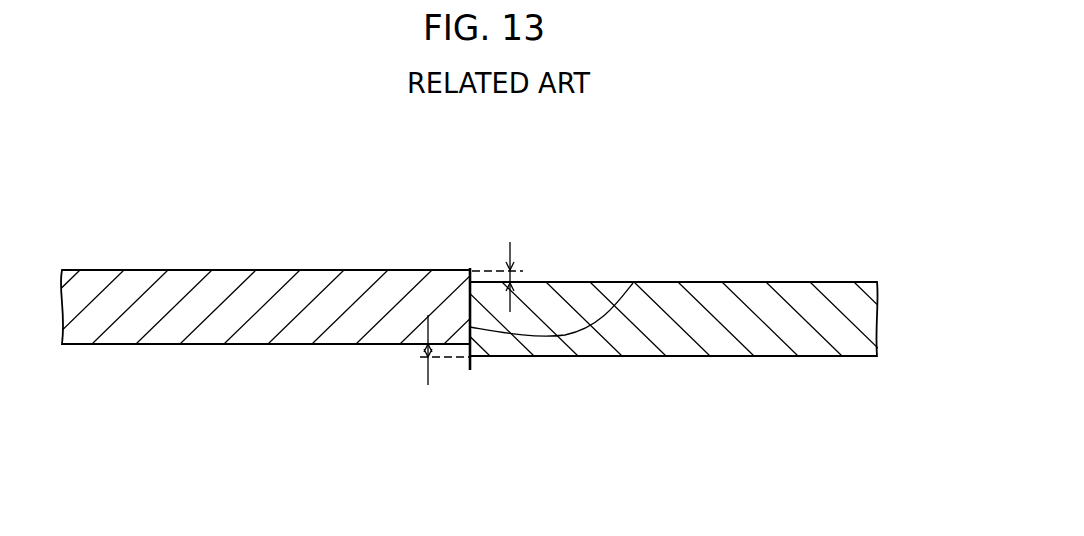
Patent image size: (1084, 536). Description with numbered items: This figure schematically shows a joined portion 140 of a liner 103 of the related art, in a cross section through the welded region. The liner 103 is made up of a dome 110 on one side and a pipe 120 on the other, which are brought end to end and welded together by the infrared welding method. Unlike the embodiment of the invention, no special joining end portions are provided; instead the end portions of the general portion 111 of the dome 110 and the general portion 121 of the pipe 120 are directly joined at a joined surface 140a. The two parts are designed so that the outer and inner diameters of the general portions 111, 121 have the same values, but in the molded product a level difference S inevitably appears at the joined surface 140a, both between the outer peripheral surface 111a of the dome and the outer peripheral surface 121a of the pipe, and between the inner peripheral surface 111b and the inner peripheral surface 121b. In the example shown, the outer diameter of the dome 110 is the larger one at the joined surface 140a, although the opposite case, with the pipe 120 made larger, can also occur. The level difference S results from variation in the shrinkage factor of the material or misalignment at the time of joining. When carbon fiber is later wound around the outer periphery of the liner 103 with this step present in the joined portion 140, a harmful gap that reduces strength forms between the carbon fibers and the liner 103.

The dome 110 is at (265, 291).
The general portion 111 is at (212, 327).
The outer peripheral surface 111a is at (399, 270).
The inner peripheral surface 111b is at (298, 344).
The pipe 120 is at (823, 298).
The general portion 121 is at (757, 337).
The outer peripheral surface 121a is at (602, 283).
The inner peripheral surface 121b is at (550, 356).
The joined portion 140 is at (478, 248).
The joined surface 140a is at (633, 283).
The liner 103 is at (775, 238).
The level difference S is at (512, 272).